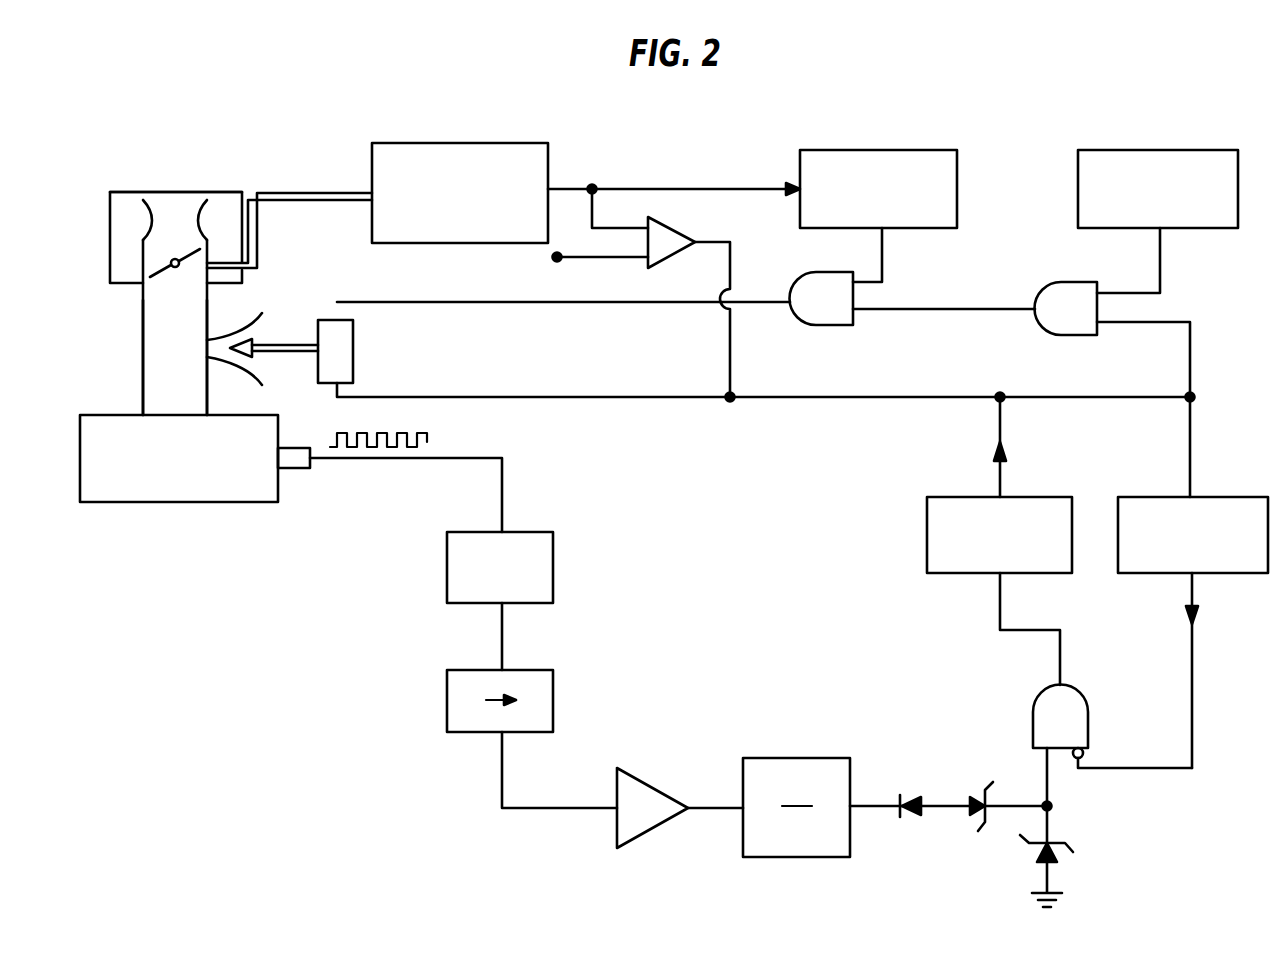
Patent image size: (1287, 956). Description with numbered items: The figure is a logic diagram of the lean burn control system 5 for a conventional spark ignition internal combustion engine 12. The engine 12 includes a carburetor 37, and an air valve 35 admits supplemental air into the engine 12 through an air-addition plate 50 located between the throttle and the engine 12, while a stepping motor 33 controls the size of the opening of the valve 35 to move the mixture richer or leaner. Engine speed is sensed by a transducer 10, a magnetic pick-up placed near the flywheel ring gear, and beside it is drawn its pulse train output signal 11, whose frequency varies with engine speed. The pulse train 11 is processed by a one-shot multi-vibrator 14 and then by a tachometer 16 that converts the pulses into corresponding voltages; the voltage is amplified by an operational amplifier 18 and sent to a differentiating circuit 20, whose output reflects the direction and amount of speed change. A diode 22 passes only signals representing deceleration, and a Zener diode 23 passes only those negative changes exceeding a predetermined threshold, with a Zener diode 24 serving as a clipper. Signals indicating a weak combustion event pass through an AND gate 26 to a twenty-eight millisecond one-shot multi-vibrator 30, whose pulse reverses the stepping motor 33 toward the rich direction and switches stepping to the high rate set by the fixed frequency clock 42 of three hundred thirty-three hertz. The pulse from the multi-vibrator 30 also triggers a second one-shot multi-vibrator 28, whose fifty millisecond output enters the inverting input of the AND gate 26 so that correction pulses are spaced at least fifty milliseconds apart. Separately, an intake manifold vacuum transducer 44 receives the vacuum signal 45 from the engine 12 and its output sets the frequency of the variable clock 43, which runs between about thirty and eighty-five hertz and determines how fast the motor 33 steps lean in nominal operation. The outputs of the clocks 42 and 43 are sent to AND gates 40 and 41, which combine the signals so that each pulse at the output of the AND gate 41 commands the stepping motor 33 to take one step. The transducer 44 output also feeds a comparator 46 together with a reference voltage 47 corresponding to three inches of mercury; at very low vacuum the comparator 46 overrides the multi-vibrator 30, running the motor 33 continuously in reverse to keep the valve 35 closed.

The lean burn control system 5 is at (118, 186).
The carburetor 37 is at (217, 205).
The vacuum level signal 45 is at (298, 190).
The intake manifold vacuum transducer 44 is at (478, 143).
The variable frequency oscillator clock 43 is at (898, 150).
The fixed frequency oscillator clock 42 is at (1160, 150).
The comparator 46 is at (675, 240).
The reference voltage 47 is at (557, 259).
The air valve 35 is at (258, 318).
The stepping motor 33 is at (327, 320).
The AND gate 41 is at (828, 325).
The AND gate 40 is at (1070, 335).
The air-addition plate 50 is at (162, 361).
The internal combustion engine 12 is at (162, 470).
The transducer 10 is at (295, 470).
The pulse train output signal 11 is at (432, 440).
The one-shot multi-vibrator 14 is at (548, 532).
The tachometer 16 is at (548, 670).
The operational amplifier 18 is at (640, 777).
The differentiating circuit 20 is at (755, 758).
The diode 22 is at (916, 797).
The Zener diode 23 is at (972, 800).
The Zener diode clipper 24 is at (1060, 850).
The AND gate 26 is at (1033, 706).
The second one-shot multi-vibrator 28 is at (1227, 497).
The 28 millisecond one-shot multi-vibrator 30 is at (1053, 497).